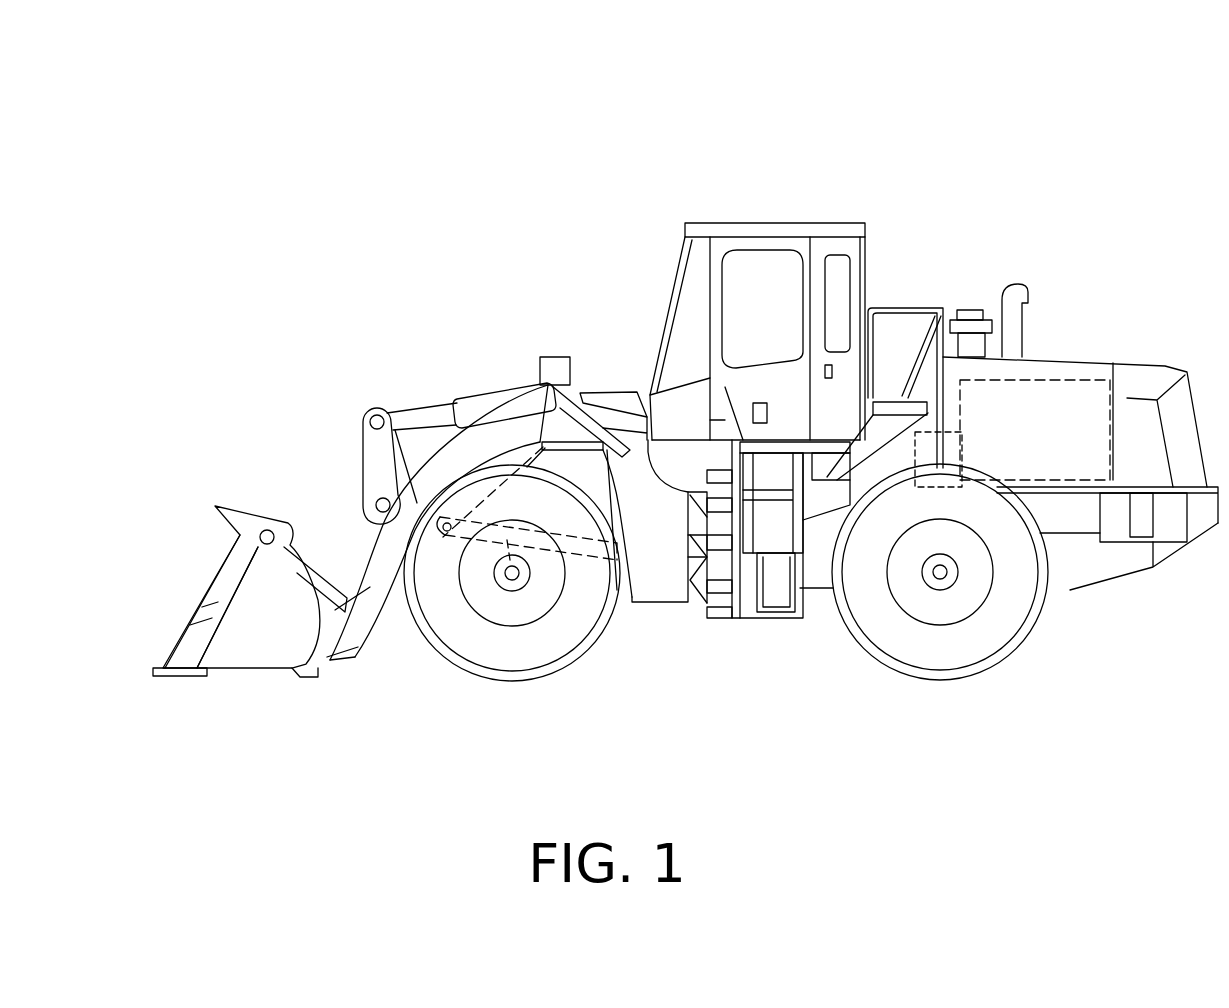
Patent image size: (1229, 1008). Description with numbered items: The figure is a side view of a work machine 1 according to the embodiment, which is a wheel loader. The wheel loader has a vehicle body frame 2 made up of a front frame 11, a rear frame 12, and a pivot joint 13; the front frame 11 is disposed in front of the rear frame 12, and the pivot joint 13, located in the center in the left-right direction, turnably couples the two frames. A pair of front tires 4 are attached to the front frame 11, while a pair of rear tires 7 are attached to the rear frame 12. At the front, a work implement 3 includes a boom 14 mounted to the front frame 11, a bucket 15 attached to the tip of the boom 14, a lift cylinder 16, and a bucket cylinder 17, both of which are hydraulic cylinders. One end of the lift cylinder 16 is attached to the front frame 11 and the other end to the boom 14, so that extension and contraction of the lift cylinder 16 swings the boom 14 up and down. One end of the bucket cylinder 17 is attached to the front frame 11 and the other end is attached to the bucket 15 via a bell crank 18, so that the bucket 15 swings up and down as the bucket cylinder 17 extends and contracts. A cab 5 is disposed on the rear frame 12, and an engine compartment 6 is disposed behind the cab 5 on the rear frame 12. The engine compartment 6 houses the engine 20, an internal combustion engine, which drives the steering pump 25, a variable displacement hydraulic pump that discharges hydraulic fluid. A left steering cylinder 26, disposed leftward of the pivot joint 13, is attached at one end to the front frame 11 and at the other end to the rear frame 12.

The work machine 1 is at (1005, 128).
The vehicle body frame 2 is at (771, 630).
The work implement 3 is at (231, 503).
The front tires 4 is at (525, 667).
The cab 5 is at (826, 232).
The engine compartment 6 is at (1063, 357).
The rear tires 7 is at (955, 660).
The front frame 11 is at (641, 588).
The rear frame 12 is at (810, 605).
The pivot joint 13 is at (722, 620).
The boom 14 is at (417, 503).
The bucket 15 is at (217, 607).
The lift cylinder 16 is at (450, 560).
The bucket cylinder 17 is at (466, 398).
The bell crank 18 is at (370, 475).
The engine 20 is at (1038, 380).
The steering pump 25 is at (948, 432).
The left steering cylinder 26 is at (700, 618).